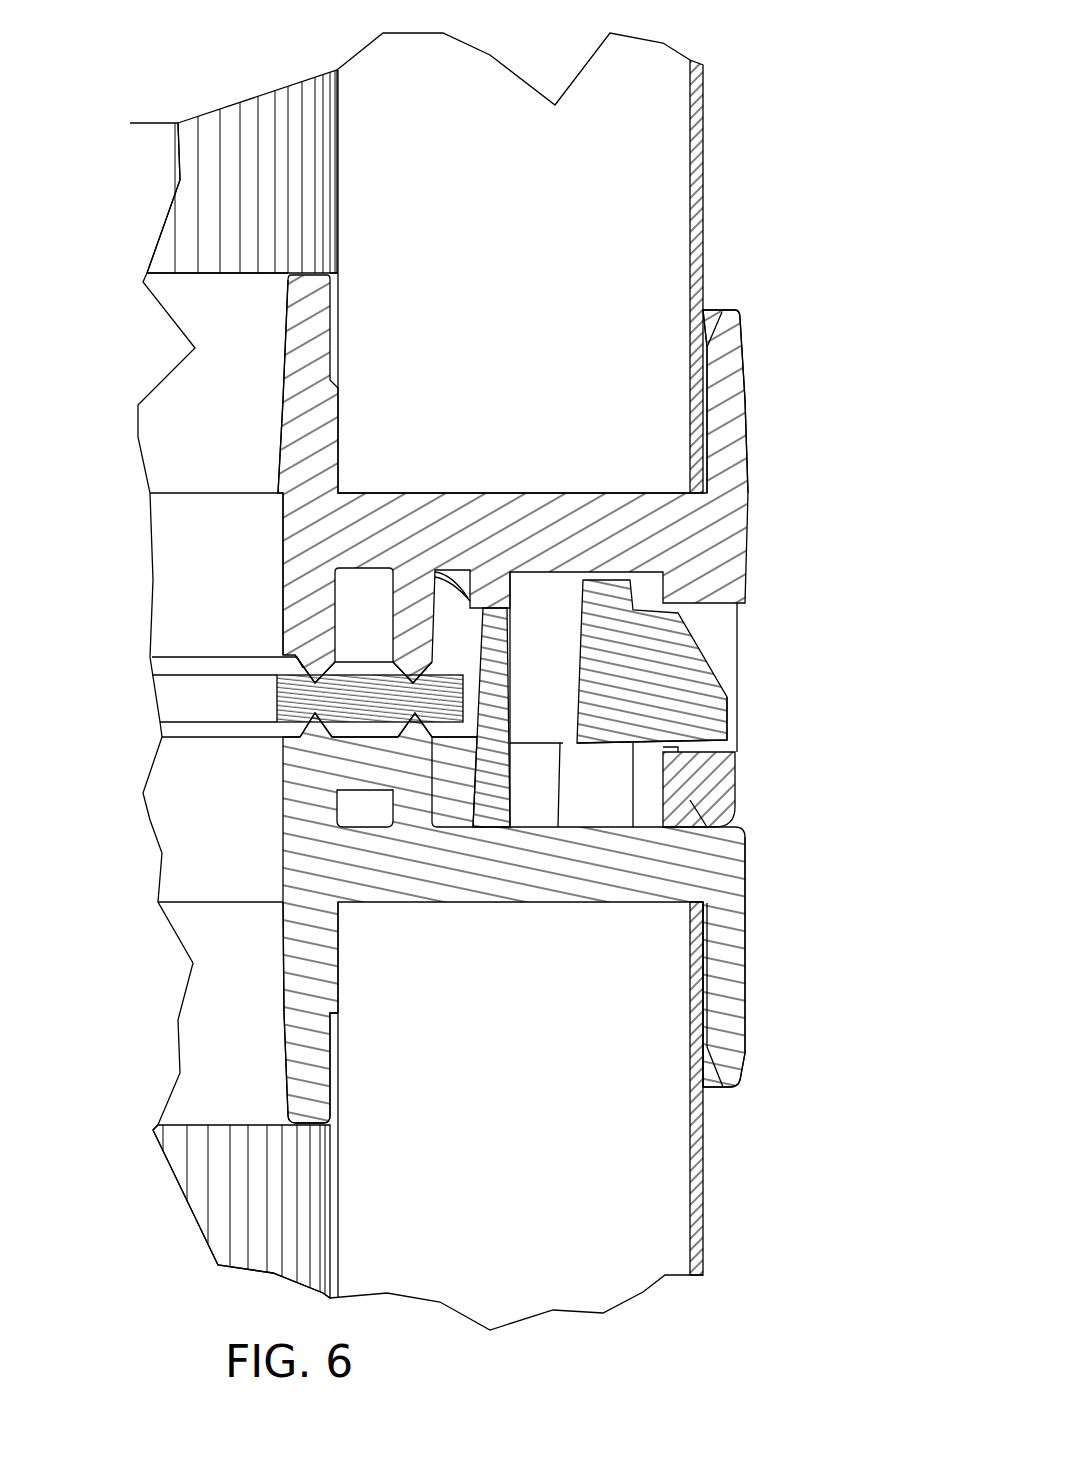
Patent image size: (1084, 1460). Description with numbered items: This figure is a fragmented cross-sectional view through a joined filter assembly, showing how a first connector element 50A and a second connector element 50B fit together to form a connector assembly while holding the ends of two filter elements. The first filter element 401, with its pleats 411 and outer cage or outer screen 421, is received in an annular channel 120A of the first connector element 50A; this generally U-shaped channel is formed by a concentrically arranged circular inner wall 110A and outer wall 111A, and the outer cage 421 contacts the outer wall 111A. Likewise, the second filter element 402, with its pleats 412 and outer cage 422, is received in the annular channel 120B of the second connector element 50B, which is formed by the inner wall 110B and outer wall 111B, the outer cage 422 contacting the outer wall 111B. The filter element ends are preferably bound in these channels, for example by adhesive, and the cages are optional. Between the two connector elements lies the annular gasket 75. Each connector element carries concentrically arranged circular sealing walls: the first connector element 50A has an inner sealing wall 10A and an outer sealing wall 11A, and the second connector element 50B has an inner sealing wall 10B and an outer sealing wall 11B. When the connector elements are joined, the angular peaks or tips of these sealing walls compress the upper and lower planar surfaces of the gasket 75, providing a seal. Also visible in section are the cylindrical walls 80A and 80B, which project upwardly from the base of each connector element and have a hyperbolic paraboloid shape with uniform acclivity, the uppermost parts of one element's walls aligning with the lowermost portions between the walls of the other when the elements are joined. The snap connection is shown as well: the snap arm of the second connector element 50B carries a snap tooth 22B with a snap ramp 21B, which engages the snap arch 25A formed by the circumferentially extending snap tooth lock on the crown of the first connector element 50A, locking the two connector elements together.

The first filter element 401 is at (443, 100).
The second filter element 402 is at (643, 1292).
The pleats 411 is at (233, 170).
The pleats 412 is at (248, 1197).
The outer cage 421 is at (703, 105).
The outer cage 422 is at (703, 1177).
The annular channel 120A is at (393, 353).
The annular channel 120B is at (494, 973).
The inner wall 110A is at (310, 322).
The inner wall 110B is at (310, 1083).
The outer wall 111A is at (738, 340).
The outer wall 111B is at (740, 1060).
The first connector element 50A is at (747, 543).
The second connector element 50B is at (745, 910).
The wall 80A is at (498, 608).
The wall 80B is at (513, 657).
The outer sealing wall 11A is at (413, 662).
The outer sealing wall 11B is at (415, 735).
The inner sealing wall 10A is at (318, 662).
The inner sealing wall 10B is at (317, 735).
The annular gasket 75 is at (277, 703).
The snap ramp 21B is at (702, 653).
The snap tooth 22B is at (730, 718).
The snap arch 25A is at (733, 782).